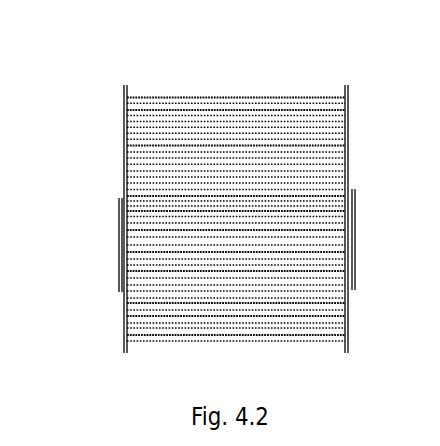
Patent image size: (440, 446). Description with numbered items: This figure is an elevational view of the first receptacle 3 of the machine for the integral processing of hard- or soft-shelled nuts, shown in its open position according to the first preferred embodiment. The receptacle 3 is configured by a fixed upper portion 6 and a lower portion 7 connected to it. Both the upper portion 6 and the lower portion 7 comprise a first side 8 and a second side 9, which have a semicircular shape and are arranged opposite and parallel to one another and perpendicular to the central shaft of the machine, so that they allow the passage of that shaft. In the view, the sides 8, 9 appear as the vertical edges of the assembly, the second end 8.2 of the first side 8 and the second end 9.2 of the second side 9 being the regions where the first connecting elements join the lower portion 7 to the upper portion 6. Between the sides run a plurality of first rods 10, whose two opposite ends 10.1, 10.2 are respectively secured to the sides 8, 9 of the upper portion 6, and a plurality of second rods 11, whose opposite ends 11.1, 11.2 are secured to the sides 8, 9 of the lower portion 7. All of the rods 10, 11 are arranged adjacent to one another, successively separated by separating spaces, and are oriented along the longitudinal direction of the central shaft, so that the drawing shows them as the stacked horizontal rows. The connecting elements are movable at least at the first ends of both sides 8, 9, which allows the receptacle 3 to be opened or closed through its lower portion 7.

The first receptacle 3 is at (167, 72).
The upper portion 6 is at (237, 100).
The lower portion 7 is at (273, 340).
The first side 8 is at (125, 147).
The second end of the first side 8.2 is at (121, 196).
The second side 9 is at (348, 138).
The second end of the second side 9.2 is at (353, 190).
The first rods 10 is at (245, 150).
The first end of the first rods 10.1 is at (125, 105).
The second end of the first rods 10.2 is at (352, 97).
The second rods 11 is at (220, 300).
The first end of the second rods 11.1 is at (124, 340).
The second end of the second rods 11.2 is at (348, 333).